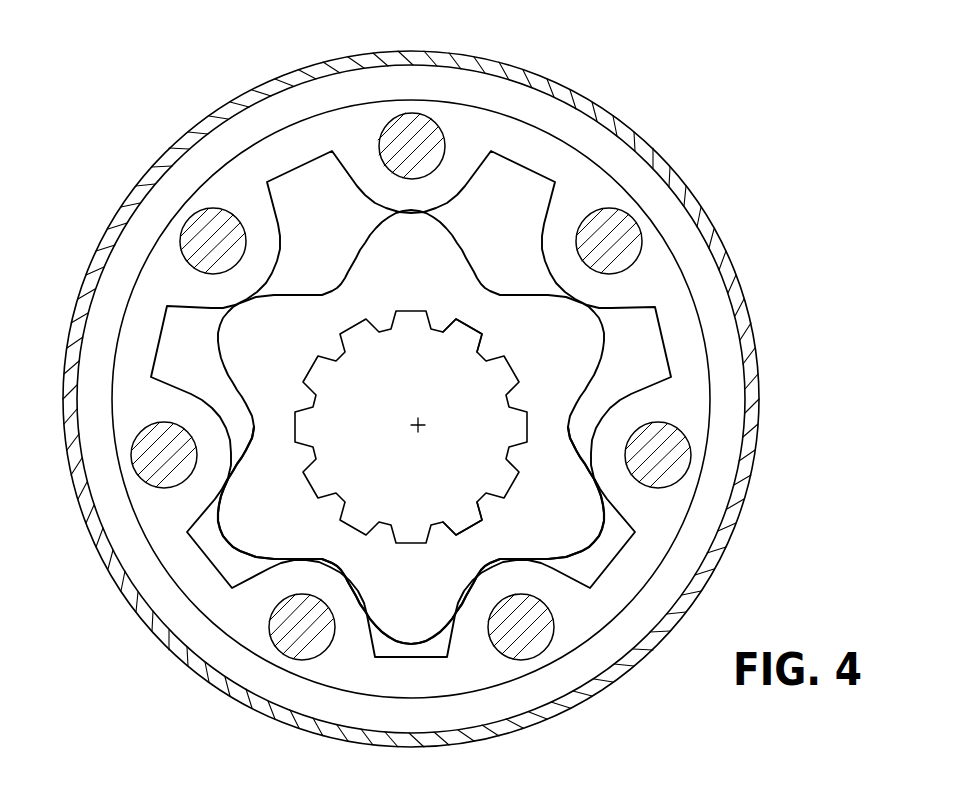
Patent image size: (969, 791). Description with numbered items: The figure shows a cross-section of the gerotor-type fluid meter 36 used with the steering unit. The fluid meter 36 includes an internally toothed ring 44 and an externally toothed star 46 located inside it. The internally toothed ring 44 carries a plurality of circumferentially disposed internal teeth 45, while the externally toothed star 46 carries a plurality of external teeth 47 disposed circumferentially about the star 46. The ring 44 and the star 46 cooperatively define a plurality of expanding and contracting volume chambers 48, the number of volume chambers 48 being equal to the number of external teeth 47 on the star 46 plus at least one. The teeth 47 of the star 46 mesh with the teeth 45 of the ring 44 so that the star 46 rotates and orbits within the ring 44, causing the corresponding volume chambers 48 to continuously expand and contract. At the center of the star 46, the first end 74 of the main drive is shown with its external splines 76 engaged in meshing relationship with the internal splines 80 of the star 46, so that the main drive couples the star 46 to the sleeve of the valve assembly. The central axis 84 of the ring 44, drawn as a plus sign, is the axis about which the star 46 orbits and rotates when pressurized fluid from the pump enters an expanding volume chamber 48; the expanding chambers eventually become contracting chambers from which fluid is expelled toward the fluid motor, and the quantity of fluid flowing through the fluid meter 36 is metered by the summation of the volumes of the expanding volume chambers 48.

The fluid meter 36 is at (178, 133).
The internally toothed ring 44 is at (583, 93).
The internal teeth 45 is at (205, 438).
The externally toothed star 46 is at (450, 267).
The external teeth 47 is at (402, 625).
The volume chambers 48 is at (660, 345).
The first end of the main drive 74 is at (437, 488).
The external splines 76 is at (470, 513).
The internal splines 80 is at (468, 338).
The central axis 84 is at (414, 426).